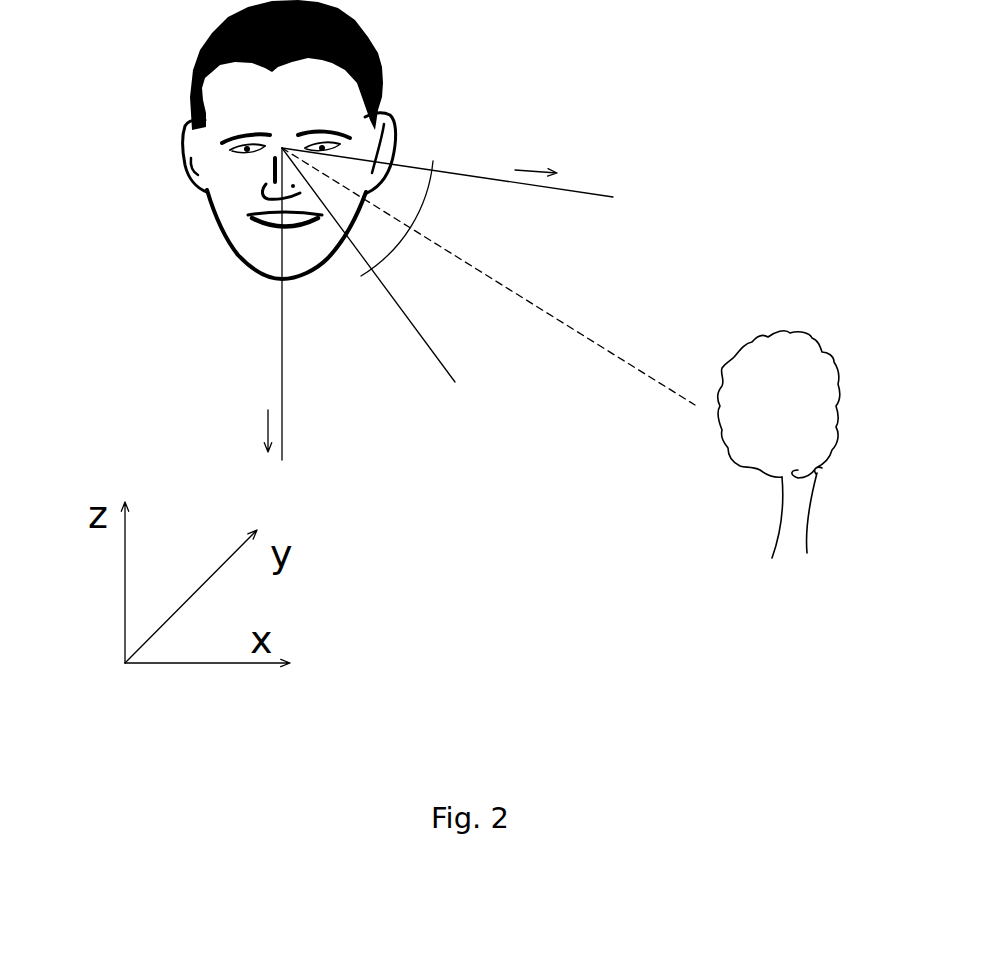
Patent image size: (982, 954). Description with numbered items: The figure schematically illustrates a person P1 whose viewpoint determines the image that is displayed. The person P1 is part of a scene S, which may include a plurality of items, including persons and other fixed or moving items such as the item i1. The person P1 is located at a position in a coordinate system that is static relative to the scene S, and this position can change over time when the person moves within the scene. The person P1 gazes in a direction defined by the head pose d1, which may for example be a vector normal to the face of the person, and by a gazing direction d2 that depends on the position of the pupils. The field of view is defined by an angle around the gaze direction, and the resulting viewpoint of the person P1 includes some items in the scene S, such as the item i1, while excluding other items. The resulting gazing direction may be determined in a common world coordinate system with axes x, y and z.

The person P1 is at (107, 259).
The head pose d1 is at (253, 429).
The gazing direction d2 is at (536, 153).
The item i1 is at (797, 543).
The scene S is at (685, 562).